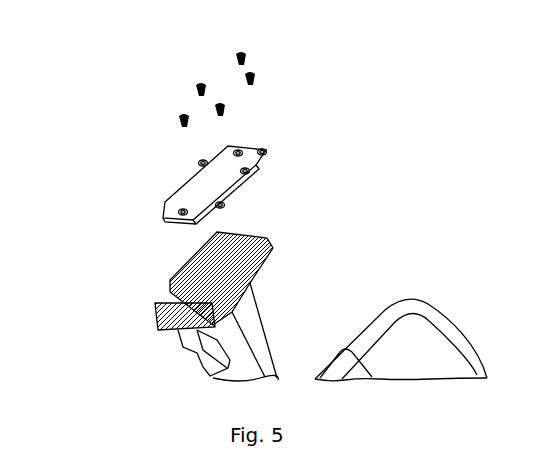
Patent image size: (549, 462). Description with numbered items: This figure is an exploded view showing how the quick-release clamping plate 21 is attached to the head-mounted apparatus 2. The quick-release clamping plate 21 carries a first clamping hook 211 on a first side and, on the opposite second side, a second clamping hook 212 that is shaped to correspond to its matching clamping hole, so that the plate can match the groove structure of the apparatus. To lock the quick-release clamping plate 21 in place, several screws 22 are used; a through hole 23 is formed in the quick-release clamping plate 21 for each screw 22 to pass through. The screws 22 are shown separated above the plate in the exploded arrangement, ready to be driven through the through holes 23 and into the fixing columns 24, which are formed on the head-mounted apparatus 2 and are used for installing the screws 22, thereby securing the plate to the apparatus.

The base 2 is at (247, 335).
The quick-release clamping plate 21 is at (212, 182).
The first clamping hook 211 is at (203, 163).
The second clamping hook 212 is at (222, 207).
The screws 22 is at (247, 54).
The through hole 23 is at (240, 152).
The fixing columns 24 is at (227, 250).